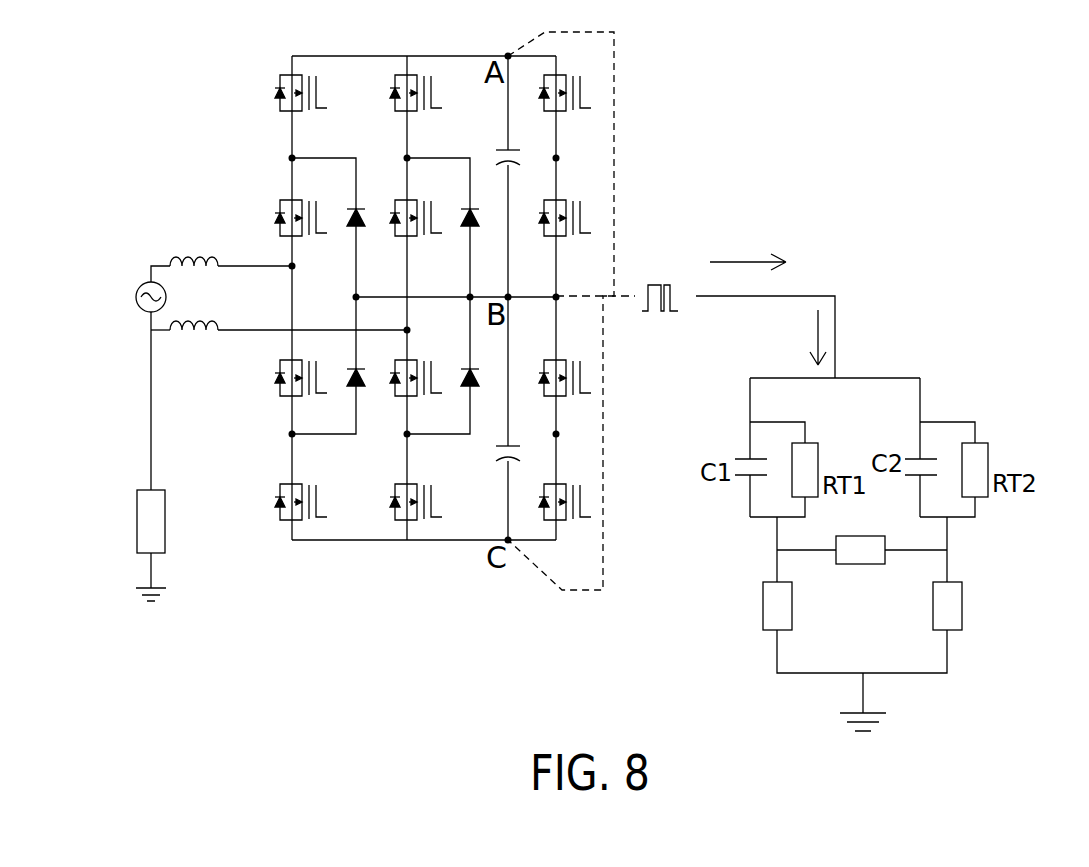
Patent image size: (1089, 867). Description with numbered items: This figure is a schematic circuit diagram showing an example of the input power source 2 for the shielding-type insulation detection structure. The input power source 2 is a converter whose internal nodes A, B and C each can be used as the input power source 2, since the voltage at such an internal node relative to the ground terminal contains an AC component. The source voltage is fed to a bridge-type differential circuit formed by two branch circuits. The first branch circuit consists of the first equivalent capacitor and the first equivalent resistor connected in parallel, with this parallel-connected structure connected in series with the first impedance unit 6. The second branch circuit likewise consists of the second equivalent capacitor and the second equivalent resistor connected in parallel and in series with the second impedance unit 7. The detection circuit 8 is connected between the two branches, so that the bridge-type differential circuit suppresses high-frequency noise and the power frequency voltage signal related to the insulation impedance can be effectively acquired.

The input power source 2 is at (650, 108).
The first impedance unit 6 is at (778, 605).
The second impedance unit 7 is at (950, 605).
The detection circuit 8 is at (863, 540).